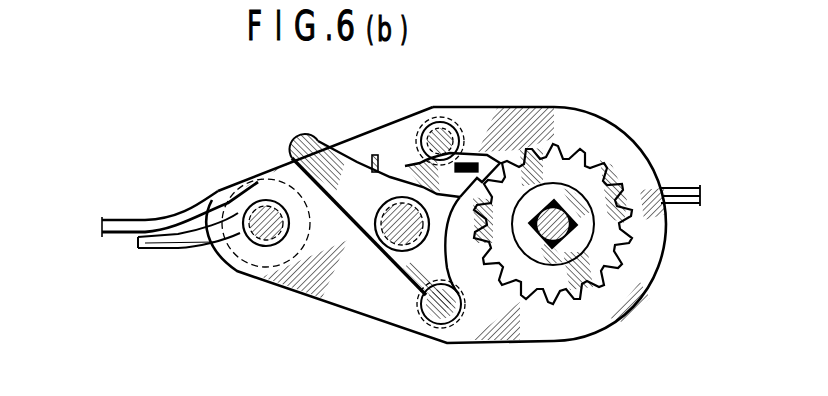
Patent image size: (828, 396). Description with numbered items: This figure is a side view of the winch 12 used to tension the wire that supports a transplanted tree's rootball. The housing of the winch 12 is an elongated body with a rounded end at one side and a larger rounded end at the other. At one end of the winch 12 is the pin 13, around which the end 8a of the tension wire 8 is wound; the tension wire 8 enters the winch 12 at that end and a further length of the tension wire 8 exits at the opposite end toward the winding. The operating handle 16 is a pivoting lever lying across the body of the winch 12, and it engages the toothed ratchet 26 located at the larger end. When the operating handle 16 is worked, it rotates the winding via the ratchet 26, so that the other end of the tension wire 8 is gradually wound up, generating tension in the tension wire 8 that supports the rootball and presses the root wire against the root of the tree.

The tension wire 8 is at (149, 219).
The end of the tension wire 8a is at (260, 181).
The winch 12 is at (584, 107).
The pin 13 is at (234, 189).
The operating handle 16 is at (365, 220).
The ratchet 26 is at (595, 257).